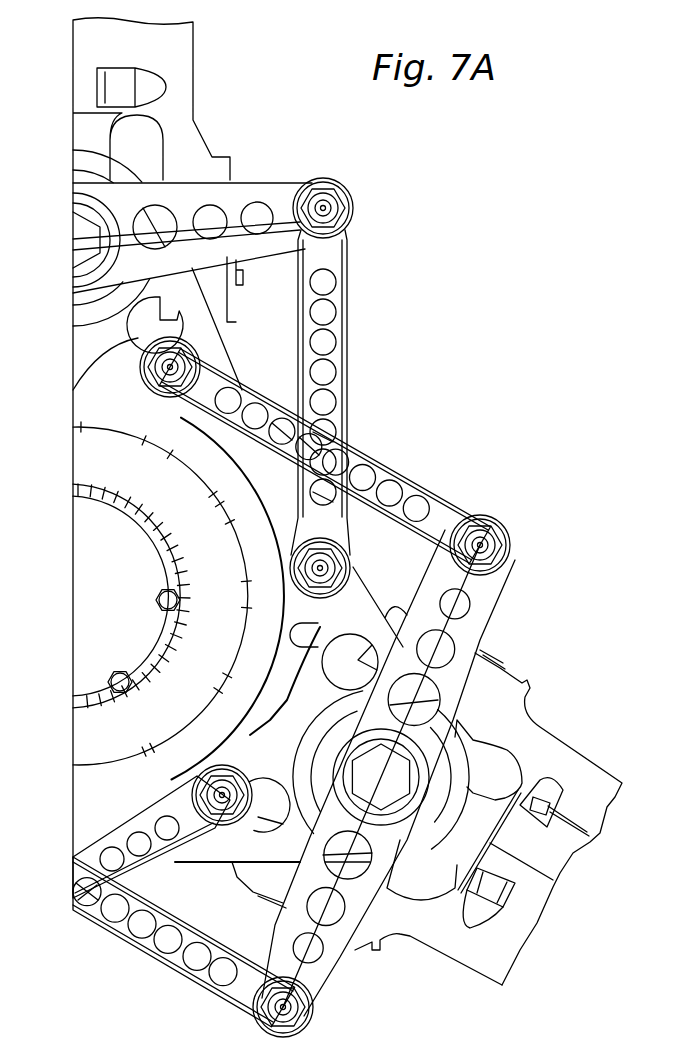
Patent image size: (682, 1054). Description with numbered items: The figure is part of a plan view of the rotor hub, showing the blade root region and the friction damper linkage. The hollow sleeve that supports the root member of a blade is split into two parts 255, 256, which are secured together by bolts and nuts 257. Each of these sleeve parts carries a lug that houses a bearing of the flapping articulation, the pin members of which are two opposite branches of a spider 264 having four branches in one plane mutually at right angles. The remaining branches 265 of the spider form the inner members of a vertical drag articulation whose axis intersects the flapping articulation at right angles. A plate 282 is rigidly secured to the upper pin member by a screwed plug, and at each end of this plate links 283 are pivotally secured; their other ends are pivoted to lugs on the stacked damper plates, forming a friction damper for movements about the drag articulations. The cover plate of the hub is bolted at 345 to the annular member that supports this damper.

The spider 264 is at (178, 599).
The branches 265 is at (227, 507).
The links 283 is at (152, 942).
The plate 282 is at (475, 620).
The sleeve part 255 is at (540, 747).
The sleeve part 256 is at (440, 945).
The bolts and nuts 257 is at (507, 902).
The bolts 345 is at (168, 600).